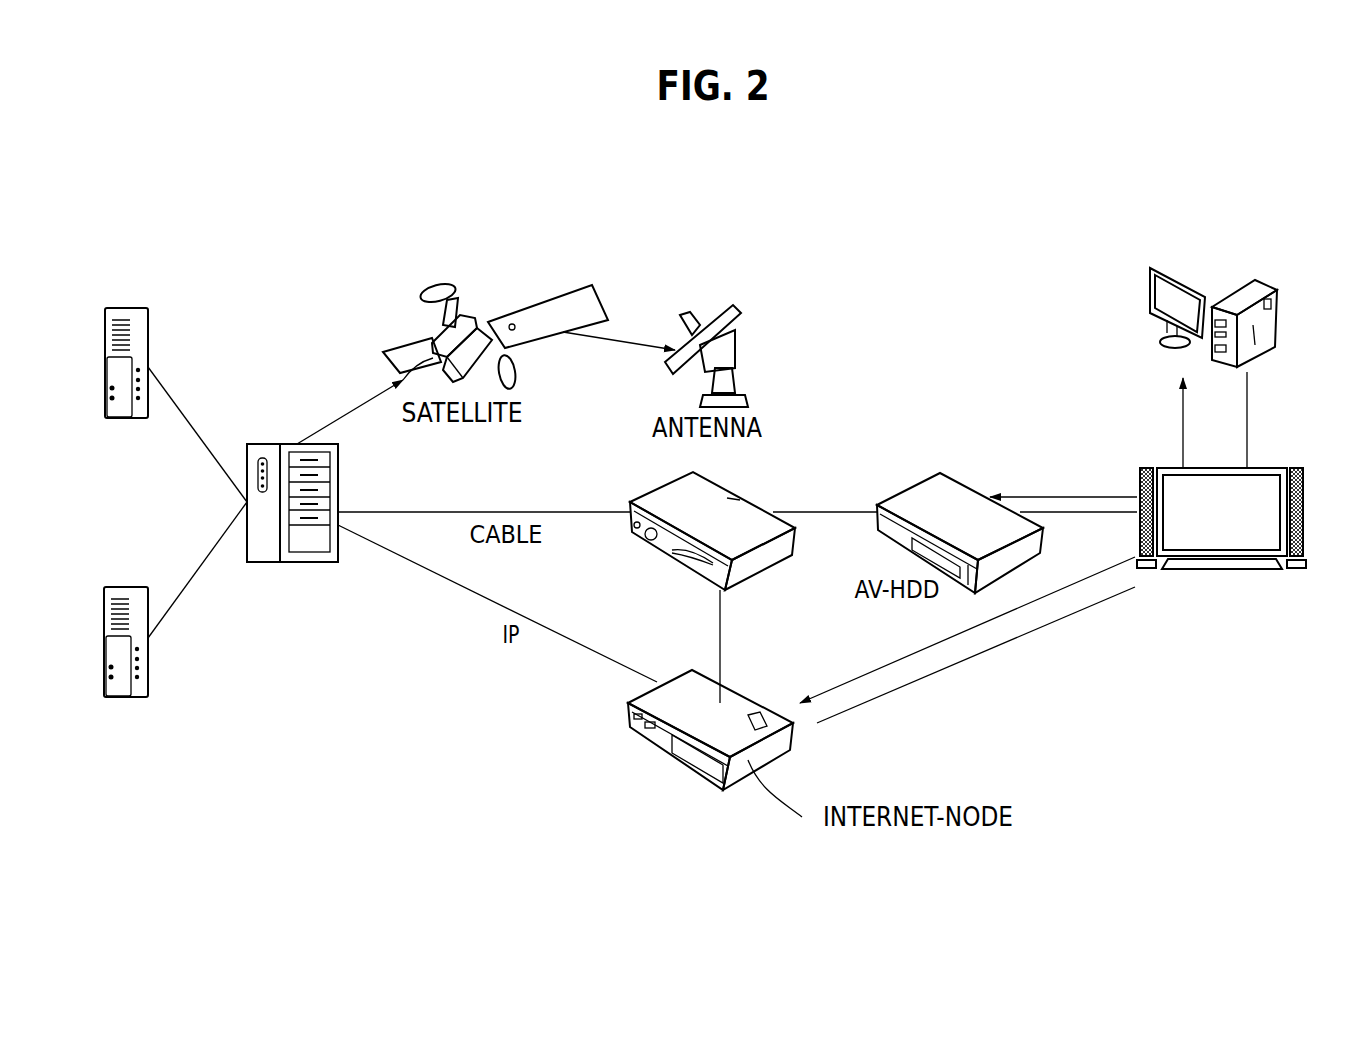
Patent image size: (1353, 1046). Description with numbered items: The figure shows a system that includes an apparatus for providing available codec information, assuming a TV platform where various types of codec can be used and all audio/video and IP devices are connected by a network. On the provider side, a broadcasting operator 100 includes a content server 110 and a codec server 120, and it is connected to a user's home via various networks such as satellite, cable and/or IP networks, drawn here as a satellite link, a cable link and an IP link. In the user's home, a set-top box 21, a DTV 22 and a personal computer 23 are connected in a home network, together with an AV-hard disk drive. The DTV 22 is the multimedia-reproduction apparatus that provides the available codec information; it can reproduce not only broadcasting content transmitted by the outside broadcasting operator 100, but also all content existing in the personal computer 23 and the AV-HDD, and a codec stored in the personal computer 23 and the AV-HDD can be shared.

The broadcasting operator 100 is at (268, 557).
The content server 110 is at (117, 410).
The codec server 120 is at (150, 688).
The set-top box 21 is at (732, 487).
The DTV 22 is at (1224, 569).
The personal computer 23 is at (1230, 290).